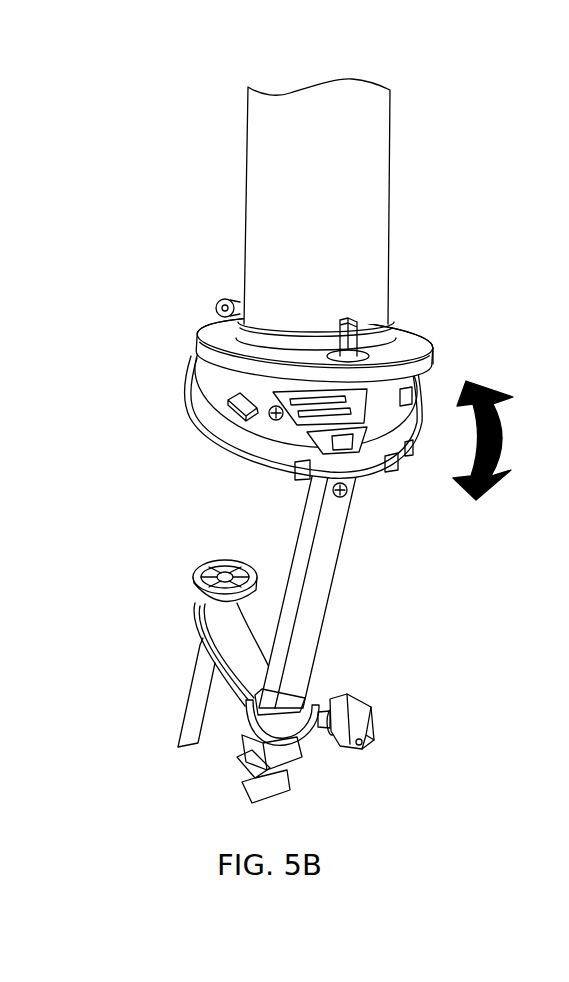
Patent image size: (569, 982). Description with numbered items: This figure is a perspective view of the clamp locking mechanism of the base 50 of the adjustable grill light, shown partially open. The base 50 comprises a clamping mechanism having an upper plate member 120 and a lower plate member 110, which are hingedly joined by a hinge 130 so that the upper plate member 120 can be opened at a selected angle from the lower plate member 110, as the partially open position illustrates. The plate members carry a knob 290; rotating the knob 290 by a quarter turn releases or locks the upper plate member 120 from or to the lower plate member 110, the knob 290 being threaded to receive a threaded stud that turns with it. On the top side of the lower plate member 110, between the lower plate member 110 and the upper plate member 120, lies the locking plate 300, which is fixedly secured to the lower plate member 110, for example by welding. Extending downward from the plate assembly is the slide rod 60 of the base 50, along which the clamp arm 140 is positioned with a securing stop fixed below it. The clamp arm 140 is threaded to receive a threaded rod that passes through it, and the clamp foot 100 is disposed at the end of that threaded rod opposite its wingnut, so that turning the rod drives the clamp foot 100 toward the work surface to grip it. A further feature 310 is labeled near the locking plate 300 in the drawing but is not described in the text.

The base 50 is at (215, 340).
The slide rod 60 is at (315, 593).
The clamp foot 100 is at (193, 580).
The lower plate member 110 is at (195, 412).
The upper plate member 120 is at (412, 363).
The hinge 130 is at (221, 297).
The clamp arm 140 is at (247, 658).
The knob 290 is at (345, 325).
The locking plate 300 is at (325, 433).
The slot 310 is at (342, 446).